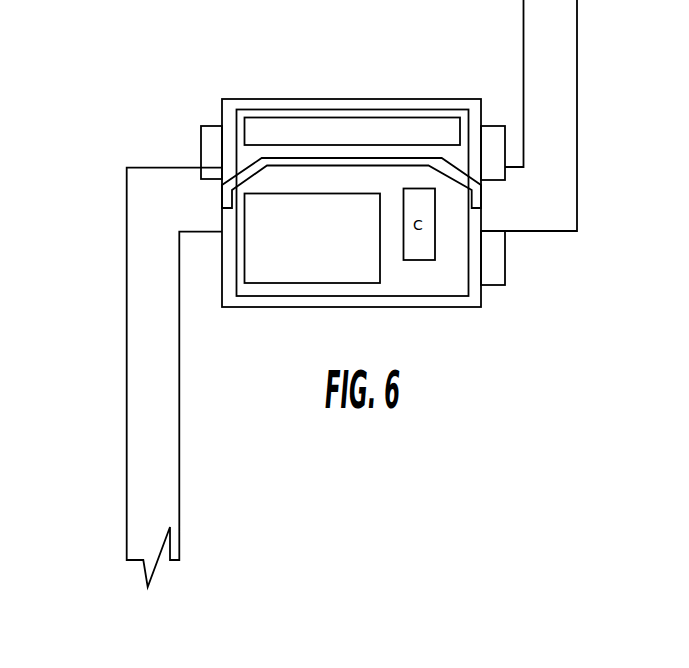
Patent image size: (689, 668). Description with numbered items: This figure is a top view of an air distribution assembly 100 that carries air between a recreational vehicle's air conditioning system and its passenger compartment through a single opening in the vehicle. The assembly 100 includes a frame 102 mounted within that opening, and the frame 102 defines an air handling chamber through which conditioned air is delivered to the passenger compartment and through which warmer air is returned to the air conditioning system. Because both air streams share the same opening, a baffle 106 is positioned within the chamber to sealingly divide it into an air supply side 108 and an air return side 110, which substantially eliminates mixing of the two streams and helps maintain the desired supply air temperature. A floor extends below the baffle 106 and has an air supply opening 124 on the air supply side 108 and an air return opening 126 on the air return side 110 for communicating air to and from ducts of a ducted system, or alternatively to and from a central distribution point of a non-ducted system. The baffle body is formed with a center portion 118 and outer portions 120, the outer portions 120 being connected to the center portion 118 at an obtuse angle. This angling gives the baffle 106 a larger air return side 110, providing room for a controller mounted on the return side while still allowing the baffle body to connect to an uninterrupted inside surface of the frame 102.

The air distribution assembly 100 is at (173, 123).
The frame 102 is at (305, 98).
The baffle 106 is at (430, 165).
The air supply side 108 is at (265, 137).
The air return side 110 is at (268, 258).
The center portion 118 is at (372, 150).
The outer portion 120 is at (255, 162).
The air supply opening 124 is at (350, 139).
The air return opening 126 is at (313, 278).